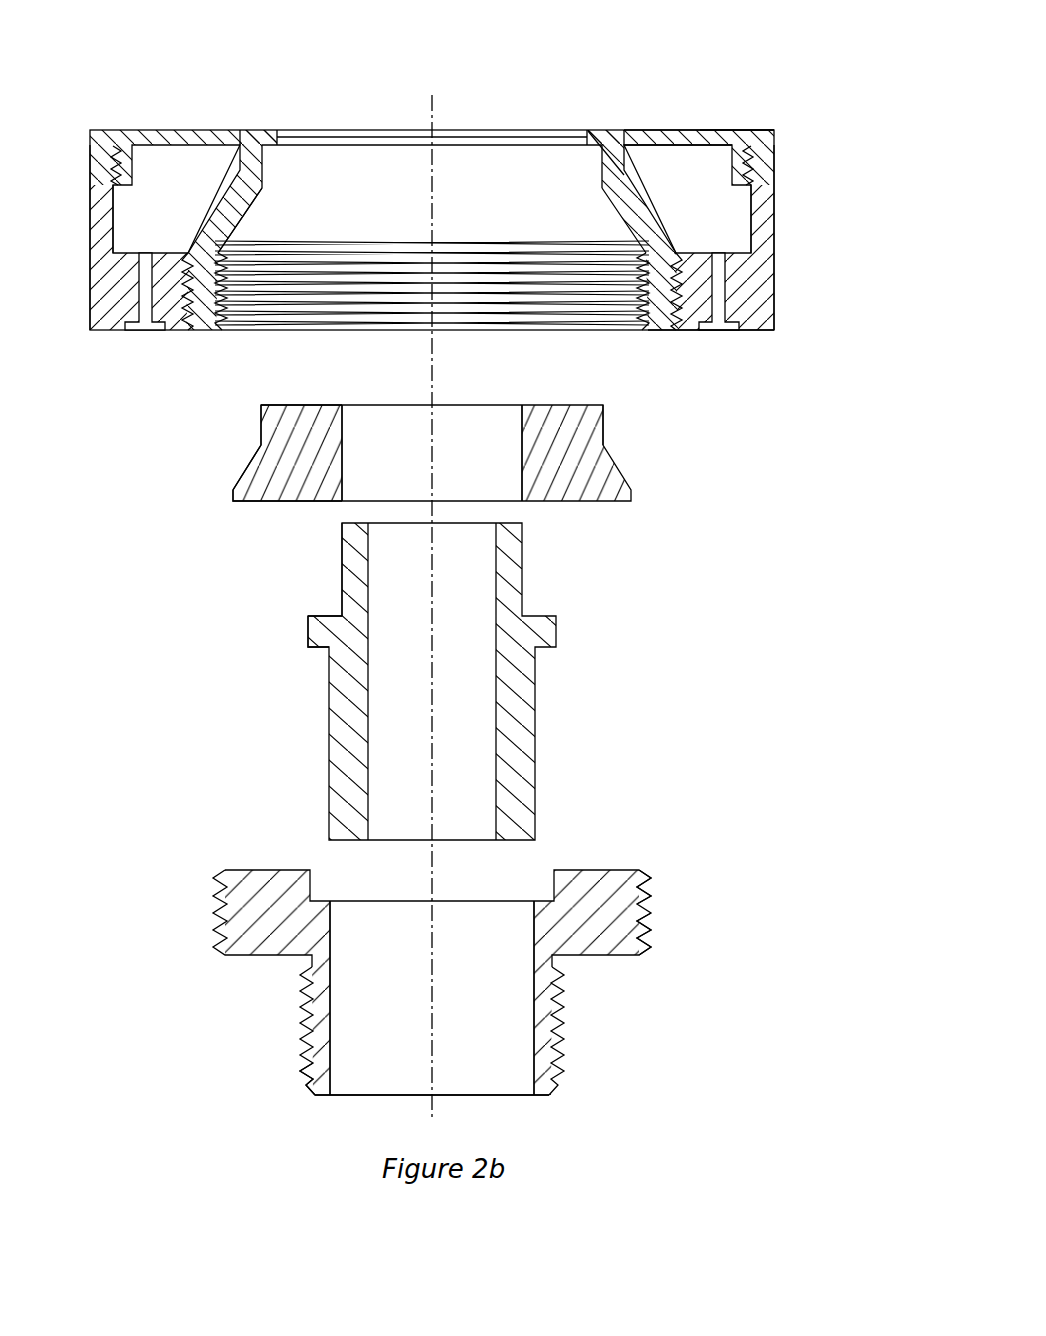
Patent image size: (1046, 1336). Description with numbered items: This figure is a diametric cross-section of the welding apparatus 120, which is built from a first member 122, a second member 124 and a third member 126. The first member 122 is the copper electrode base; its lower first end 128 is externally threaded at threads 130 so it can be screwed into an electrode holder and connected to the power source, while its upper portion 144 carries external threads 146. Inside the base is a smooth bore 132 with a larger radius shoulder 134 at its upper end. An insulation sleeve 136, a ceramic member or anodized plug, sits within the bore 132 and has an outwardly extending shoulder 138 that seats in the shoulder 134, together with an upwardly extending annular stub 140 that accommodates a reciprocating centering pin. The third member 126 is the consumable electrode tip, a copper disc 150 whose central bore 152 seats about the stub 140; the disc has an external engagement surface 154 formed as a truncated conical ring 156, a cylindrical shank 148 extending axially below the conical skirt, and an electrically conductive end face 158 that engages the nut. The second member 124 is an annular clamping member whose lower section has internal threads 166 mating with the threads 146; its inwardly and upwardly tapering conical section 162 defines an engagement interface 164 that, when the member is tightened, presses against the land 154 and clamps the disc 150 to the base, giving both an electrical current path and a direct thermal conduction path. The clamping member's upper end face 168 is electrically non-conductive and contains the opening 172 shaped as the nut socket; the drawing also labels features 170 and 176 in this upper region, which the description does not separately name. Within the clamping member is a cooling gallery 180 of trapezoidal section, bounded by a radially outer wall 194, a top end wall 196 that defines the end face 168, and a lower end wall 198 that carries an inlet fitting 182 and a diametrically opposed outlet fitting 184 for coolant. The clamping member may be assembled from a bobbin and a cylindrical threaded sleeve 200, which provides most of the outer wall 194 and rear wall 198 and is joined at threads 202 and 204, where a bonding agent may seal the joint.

The welding apparatus 120 is at (217, 69).
The first member 122 is at (213, 918).
The second member 124 is at (774, 203).
The third member 126 is at (630, 479).
The first end 128 is at (301, 1034).
The external threads 130 is at (301, 1070).
The bore 132 is at (332, 1068).
The shoulder 134 is at (535, 914).
The insulation sleeve 136 is at (330, 731).
The shoulder 138 is at (308, 636).
The annular stub 140 is at (342, 577).
The upper portion 144 is at (646, 893).
The external threads 146 is at (650, 926).
The cylindrical shank 148 is at (605, 418).
The disc 150 is at (261, 413).
The central bore 152 is at (521, 436).
The engagement surface 154 is at (252, 460).
The conical ring 156 is at (236, 488).
The end face 158 is at (290, 405).
The conical section 162 is at (620, 228).
The engagement interface 164 is at (612, 212).
The internal threads 166 is at (303, 300).
The upper end face 168 is at (717, 130).
The cap 170 is at (695, 130).
The opening 172 is at (458, 130).
The insert upper portion 176 is at (610, 130).
The cooling gallery 180 is at (161, 175).
The inlet fitting 182 is at (142, 332).
The outlet fitting 184 is at (774, 255).
The radially outer wall 194 is at (774, 292).
The top end wall 196 is at (757, 130).
The lower end wall 198 is at (763, 313).
The threaded sleeve 200 is at (102, 303).
The threads 202 is at (186, 322).
The threads 204 is at (117, 166).